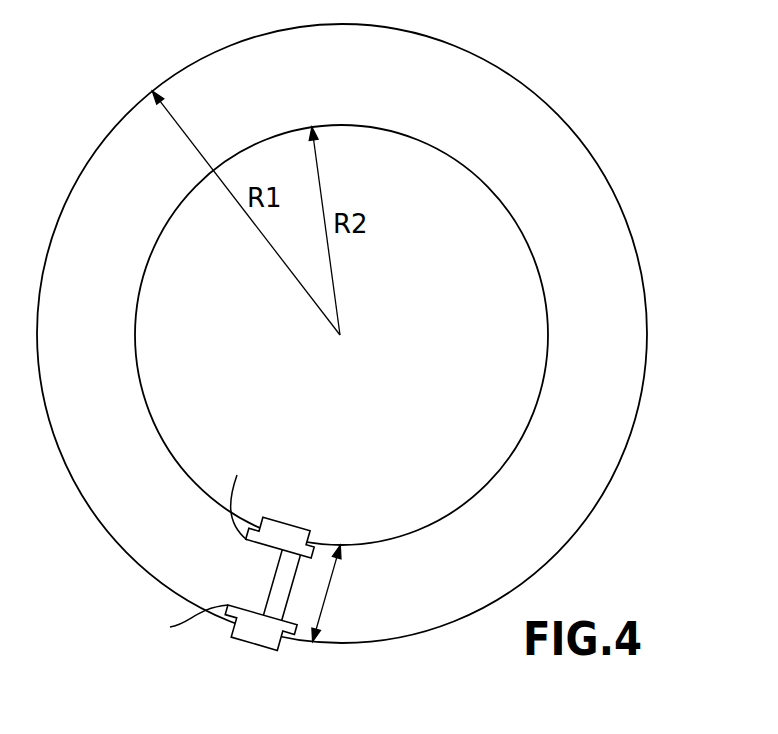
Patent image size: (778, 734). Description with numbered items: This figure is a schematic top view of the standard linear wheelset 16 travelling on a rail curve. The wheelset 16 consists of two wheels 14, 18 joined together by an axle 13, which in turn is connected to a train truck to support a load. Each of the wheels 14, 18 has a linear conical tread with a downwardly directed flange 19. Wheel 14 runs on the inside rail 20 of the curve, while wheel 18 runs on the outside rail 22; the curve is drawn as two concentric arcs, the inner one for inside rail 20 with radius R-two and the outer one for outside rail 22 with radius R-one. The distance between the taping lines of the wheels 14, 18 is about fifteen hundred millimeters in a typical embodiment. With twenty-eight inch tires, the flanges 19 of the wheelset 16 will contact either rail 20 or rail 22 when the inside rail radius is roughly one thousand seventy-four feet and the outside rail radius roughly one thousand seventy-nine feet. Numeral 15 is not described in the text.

The axle 13 is at (274, 577).
The wheel 14 is at (293, 525).
The radial gap between rings 15 is at (327, 592).
The wheelset 16 is at (226, 582).
The wheel 18 is at (247, 642).
The flange 19 is at (188, 553).
The inside rail 20 is at (548, 343).
The outside rail 22 is at (647, 347).